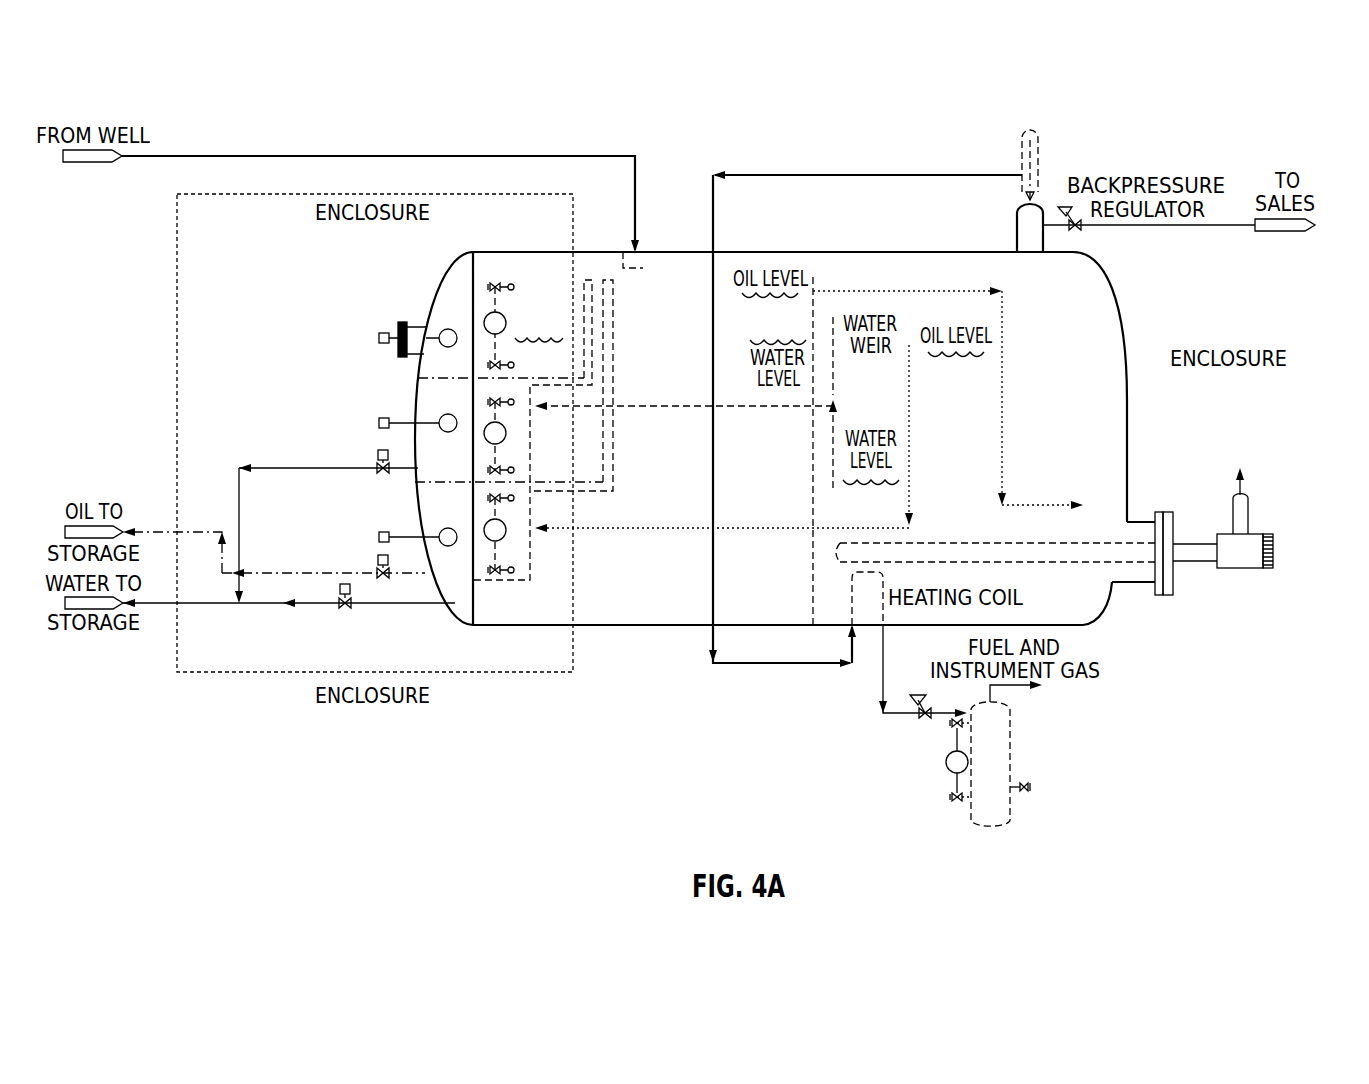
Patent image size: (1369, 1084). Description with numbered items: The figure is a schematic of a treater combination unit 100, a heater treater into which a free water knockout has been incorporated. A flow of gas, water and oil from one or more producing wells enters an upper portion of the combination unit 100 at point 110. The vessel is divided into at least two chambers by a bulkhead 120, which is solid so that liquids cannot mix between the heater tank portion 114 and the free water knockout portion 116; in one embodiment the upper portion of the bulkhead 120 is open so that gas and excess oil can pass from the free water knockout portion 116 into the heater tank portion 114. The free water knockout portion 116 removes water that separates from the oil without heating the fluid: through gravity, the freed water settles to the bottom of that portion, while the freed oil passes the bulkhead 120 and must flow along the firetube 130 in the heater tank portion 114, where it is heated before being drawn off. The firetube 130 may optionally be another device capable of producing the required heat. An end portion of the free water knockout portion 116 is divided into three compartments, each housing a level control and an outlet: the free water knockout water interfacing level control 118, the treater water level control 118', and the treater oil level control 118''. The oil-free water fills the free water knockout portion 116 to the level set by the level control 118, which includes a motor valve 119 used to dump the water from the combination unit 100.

The treater combination unit 100 is at (207, 706).
The point 110 is at (637, 250).
The heater tank portion 114 is at (851, 248).
The free water knockout portion 116 is at (508, 248).
The free water knockout water interfacing level control 118 is at (401, 309).
The treater water level control 118' is at (363, 479).
The treater oil level control 118'' is at (318, 526).
The motor valve 119 is at (345, 612).
The bulkhead 120 is at (813, 585).
The firetube 130 is at (1112, 540).